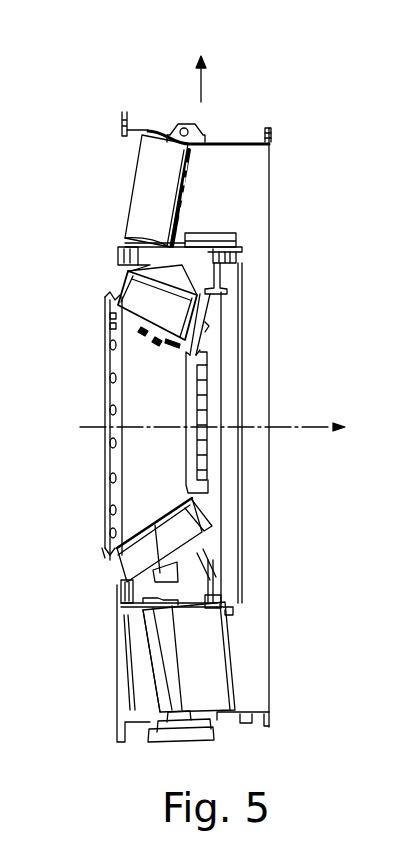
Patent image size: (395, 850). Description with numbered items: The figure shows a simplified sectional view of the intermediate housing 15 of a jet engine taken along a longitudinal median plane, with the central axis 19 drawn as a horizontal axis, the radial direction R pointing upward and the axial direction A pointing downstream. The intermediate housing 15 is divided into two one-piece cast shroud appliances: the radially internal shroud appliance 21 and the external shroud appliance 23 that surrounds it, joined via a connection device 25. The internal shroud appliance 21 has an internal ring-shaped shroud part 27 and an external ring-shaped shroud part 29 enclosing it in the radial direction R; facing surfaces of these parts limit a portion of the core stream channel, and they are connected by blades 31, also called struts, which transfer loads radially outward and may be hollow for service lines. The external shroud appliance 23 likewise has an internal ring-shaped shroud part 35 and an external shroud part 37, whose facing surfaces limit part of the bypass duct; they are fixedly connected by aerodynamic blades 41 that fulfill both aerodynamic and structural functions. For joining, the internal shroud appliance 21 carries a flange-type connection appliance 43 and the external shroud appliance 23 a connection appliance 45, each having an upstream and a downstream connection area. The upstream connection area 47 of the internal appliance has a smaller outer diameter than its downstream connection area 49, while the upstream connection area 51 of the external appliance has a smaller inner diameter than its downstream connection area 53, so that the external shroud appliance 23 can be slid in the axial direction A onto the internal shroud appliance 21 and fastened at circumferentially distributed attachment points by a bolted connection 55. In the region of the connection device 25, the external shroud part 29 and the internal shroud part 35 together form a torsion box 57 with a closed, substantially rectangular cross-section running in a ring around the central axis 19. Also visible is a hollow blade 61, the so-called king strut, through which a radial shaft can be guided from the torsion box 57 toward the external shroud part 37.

The intermediate housing 15 is at (110, 83).
The central axis 19 is at (277, 427).
The internal shroud appliance 21 is at (100, 396).
The external shroud appliance 23 is at (272, 153).
The connection device 25 is at (226, 239).
The internal ring-shaped shroud part 27 is at (143, 323).
The external ring-shaped shroud part 29 is at (235, 292).
The blades 31 is at (150, 301).
The internal ring-shaped shroud part 35 is at (198, 257).
The external shroud part 37 is at (245, 142).
The aerodynamic blades 41 is at (158, 176).
The connection appliance 43 is at (120, 255).
The connection appliance 45 is at (220, 256).
The connection area 47 is at (120, 594).
The connection area 49 is at (212, 580).
The connection area 51 is at (118, 605).
The connection area 53 is at (215, 592).
The bolted connection 55 is at (222, 262).
The torsion box 57 is at (214, 236).
The blade 61 is at (200, 685).
The radial direction R is at (201, 84).
The axial direction A is at (323, 427).